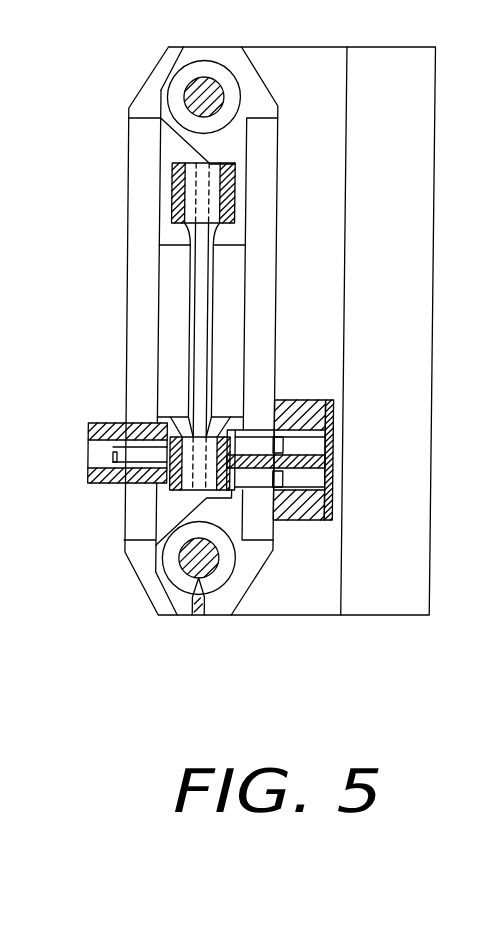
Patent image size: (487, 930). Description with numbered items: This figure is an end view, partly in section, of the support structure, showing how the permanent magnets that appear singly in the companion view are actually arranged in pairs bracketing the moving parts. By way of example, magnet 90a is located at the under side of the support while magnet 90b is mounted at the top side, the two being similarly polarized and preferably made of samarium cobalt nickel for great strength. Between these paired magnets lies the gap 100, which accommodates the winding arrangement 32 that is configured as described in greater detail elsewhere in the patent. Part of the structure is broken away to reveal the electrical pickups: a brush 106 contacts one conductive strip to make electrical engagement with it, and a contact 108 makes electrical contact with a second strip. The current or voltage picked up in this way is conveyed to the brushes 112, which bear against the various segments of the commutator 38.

The winding arrangement 32 is at (202, 298).
The commutator 38 is at (173, 416).
The magnet 90a is at (236, 308).
The magnet 90b is at (169, 335).
The gap 100 is at (193, 245).
The brush 106 is at (310, 448).
The contact 108 is at (312, 477).
The brushes 112 is at (95, 452).